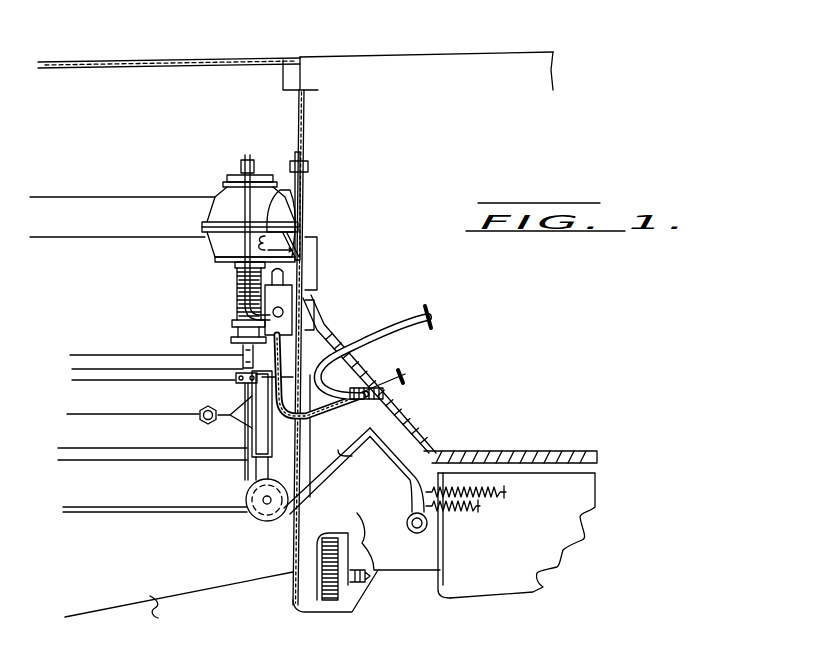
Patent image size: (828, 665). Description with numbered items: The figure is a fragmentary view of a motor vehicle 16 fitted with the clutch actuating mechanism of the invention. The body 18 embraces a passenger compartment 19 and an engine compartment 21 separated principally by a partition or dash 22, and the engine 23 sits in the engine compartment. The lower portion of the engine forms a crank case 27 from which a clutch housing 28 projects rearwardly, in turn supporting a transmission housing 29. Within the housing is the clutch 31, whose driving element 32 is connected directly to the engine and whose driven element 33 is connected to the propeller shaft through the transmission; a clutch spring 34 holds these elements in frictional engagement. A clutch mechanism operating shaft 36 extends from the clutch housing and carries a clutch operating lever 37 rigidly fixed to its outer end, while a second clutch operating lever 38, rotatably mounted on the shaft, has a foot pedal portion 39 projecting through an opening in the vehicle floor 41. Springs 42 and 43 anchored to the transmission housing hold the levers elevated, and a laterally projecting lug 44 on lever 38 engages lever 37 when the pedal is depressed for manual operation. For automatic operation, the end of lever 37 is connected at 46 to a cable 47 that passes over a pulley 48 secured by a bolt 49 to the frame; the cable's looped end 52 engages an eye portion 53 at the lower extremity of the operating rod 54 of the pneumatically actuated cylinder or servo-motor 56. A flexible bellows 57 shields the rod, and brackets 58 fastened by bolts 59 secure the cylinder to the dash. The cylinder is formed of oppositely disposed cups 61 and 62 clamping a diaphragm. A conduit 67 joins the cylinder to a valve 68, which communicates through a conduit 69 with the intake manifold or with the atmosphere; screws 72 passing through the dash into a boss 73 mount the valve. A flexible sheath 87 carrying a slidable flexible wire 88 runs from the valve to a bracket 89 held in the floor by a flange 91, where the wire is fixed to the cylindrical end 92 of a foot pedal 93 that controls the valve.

The motor vehicle 16 is at (329, 51).
The body 18 is at (458, 52).
The passenger compartment 19 is at (533, 101).
The engine compartment 21 is at (107, 100).
The partition or dash 22 is at (305, 124).
The engine 23 is at (95, 205).
The crank case 27 is at (152, 598).
The clutch housing 28 is at (403, 560).
The transmission housing 29 is at (538, 577).
The clutch 31 is at (332, 604).
The driving element 32 is at (316, 584).
The driven element 33 is at (362, 536).
The clutch spring 34 is at (352, 612).
The clutch mechanism operating shaft 36 is at (427, 530).
The clutch operating lever 37 is at (414, 461).
The clutch operating lever 38 is at (380, 417).
The foot pedal portion 39 is at (378, 328).
The vehicle floor 41 is at (542, 454).
The spring 42 is at (477, 482).
The spring 43 is at (443, 502).
The laterally projecting lug 44 is at (395, 440).
The cable connection 46 is at (343, 455).
The cable 47 is at (250, 458).
The pulley 48 is at (262, 520).
The bolt 49 is at (271, 496).
The looped end 52 is at (236, 379).
The eye portion 53 is at (242, 353).
The operating rod 54 is at (233, 327).
The pneumatically actuated cylinder or servo-motor 56 is at (220, 200).
The flexible bellows 57 is at (238, 292).
The brackets 58 is at (304, 185).
The bolts 59 is at (310, 166).
The cup 61 is at (278, 210).
The cup 62 is at (220, 245).
The conduit 67 is at (213, 202).
The valve 68 is at (322, 290).
The conduit 69 is at (285, 205).
The screws 72 is at (308, 300).
The boss 73 is at (318, 318).
The flexible sheath or conduit 87 is at (312, 398).
The flexible wire 88 is at (366, 387).
The bracket 89 is at (364, 372).
The flange 91 is at (384, 397).
The cylindrical end 92 is at (375, 377).
The foot pedal 93 is at (406, 377).